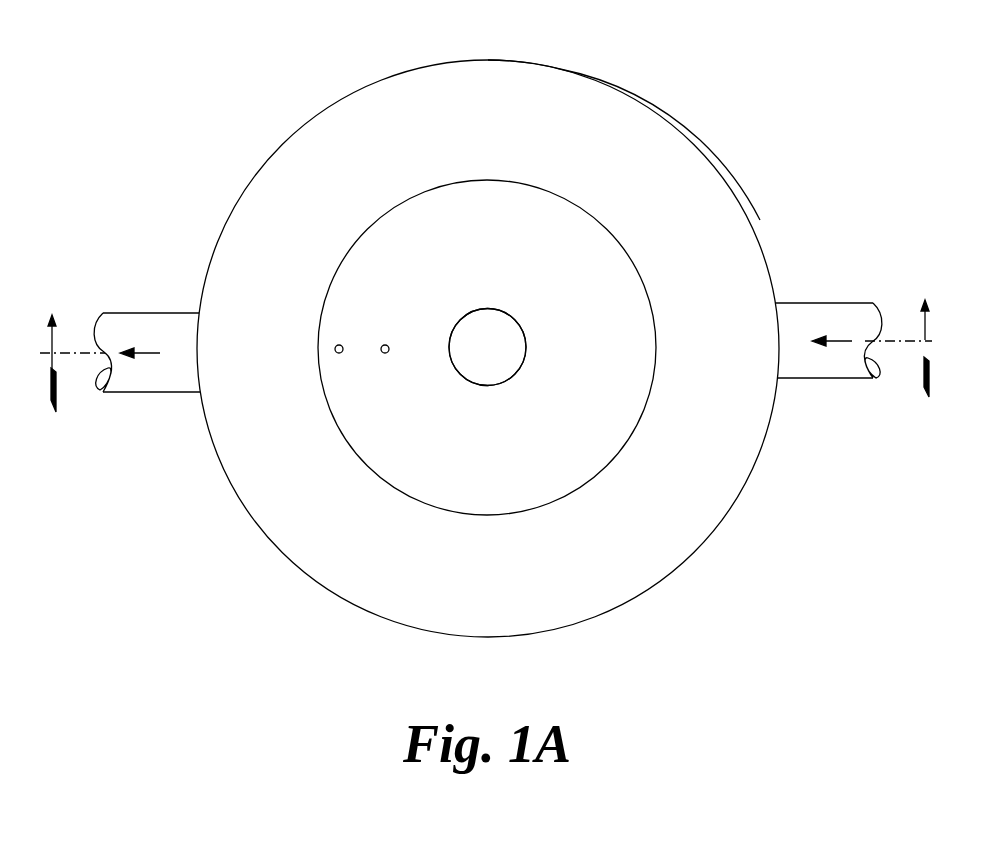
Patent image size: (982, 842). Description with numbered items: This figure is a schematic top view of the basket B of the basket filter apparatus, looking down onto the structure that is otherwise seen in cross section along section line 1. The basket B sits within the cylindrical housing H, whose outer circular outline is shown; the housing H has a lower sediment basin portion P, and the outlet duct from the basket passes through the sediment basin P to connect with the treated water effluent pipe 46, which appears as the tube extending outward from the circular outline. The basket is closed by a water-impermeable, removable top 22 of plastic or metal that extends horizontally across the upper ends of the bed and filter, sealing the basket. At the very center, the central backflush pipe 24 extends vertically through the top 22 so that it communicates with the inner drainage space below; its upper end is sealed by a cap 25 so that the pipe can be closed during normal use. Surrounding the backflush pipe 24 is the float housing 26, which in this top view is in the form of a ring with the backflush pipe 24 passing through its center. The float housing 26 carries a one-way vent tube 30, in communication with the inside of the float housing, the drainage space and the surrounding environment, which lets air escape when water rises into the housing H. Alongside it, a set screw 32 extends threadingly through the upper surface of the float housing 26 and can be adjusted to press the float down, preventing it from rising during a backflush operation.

The removable top 22 is at (745, 252).
The central backflush pipe 24 is at (456, 317).
The cap 25 is at (499, 357).
The float housing 26 is at (620, 423).
The one-way vent tube 30 is at (336, 353).
The set screw 32 is at (382, 353).
The treated water effluent pipe 46 is at (146, 313).
The sediment basin portion P is at (490, 60).
The cylindrical housing H is at (612, 127).
The basket B is at (743, 77).
The section line indicator 1 is at (488, 342).